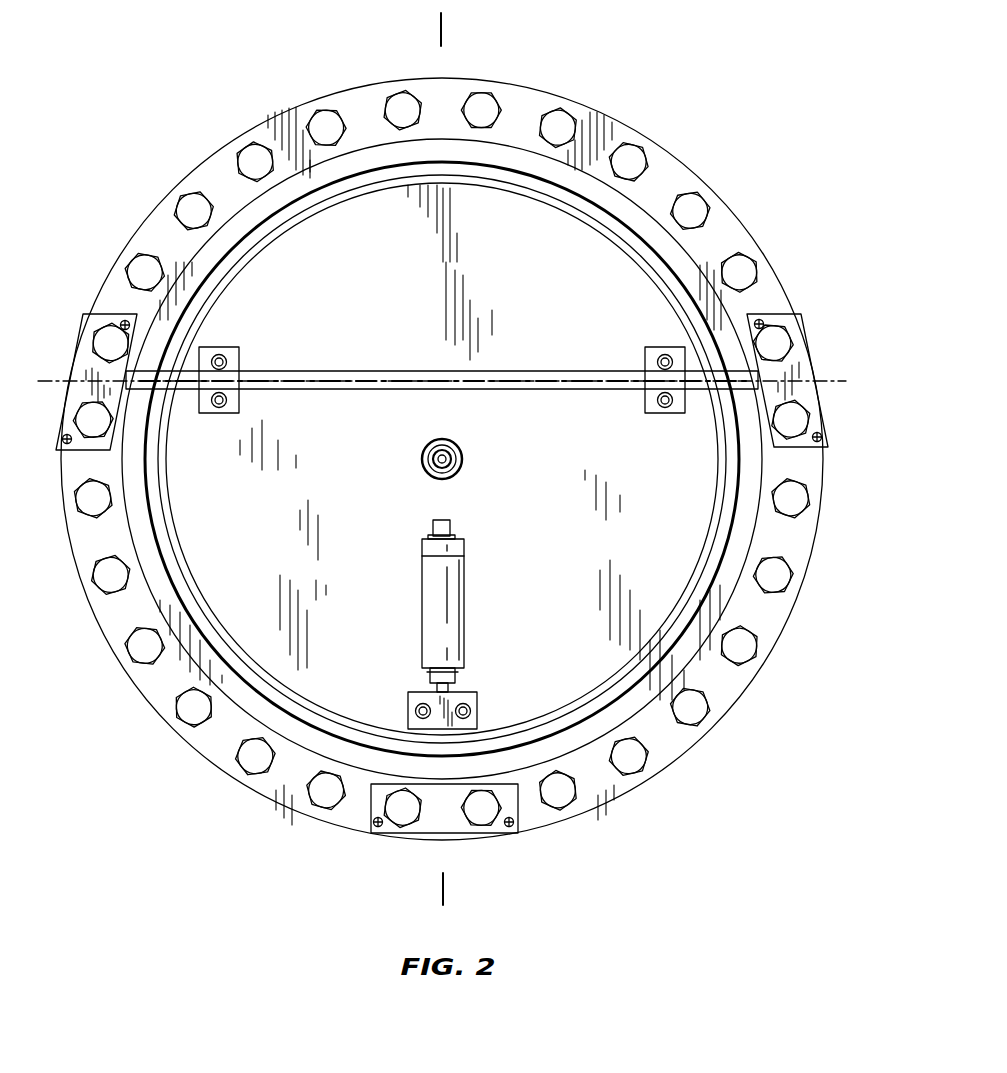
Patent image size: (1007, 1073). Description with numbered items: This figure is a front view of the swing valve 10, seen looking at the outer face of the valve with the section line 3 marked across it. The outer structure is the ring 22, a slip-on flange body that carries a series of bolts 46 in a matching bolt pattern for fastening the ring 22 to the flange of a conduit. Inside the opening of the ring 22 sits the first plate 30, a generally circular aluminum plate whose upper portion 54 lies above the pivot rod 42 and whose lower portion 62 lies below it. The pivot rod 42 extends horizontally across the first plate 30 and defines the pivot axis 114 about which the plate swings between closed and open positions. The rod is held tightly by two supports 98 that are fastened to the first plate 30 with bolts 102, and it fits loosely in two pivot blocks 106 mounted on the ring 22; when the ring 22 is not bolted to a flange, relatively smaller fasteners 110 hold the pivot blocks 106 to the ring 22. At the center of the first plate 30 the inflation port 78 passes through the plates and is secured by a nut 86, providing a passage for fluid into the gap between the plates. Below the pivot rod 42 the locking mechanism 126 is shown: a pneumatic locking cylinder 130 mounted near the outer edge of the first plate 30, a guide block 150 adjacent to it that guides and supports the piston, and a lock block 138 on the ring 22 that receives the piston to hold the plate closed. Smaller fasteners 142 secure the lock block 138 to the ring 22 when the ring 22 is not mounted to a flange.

The swing valve 10 is at (213, 55).
The section line 3- 3 is at (447, 29).
The ring 22 is at (672, 172).
The first plate 30 is at (228, 558).
The pivot rod 42 is at (400, 371).
The bolts 46 is at (240, 160).
The upper portion 54 is at (503, 218).
The lower portion 62 is at (265, 638).
The inflation port 78 is at (423, 460).
The nut 86 is at (458, 444).
The supports 98 is at (230, 347).
The bolts 102 is at (220, 408).
The pivot blocks 106 is at (78, 368).
The fasteners 110 is at (125, 322).
The pivot axis 114 is at (830, 379).
The locking mechanism 126 is at (453, 624).
The locking cylinder 130 is at (430, 588).
The lock block 138 is at (437, 820).
The fasteners 142 is at (370, 818).
The guide block 150 is at (470, 690).